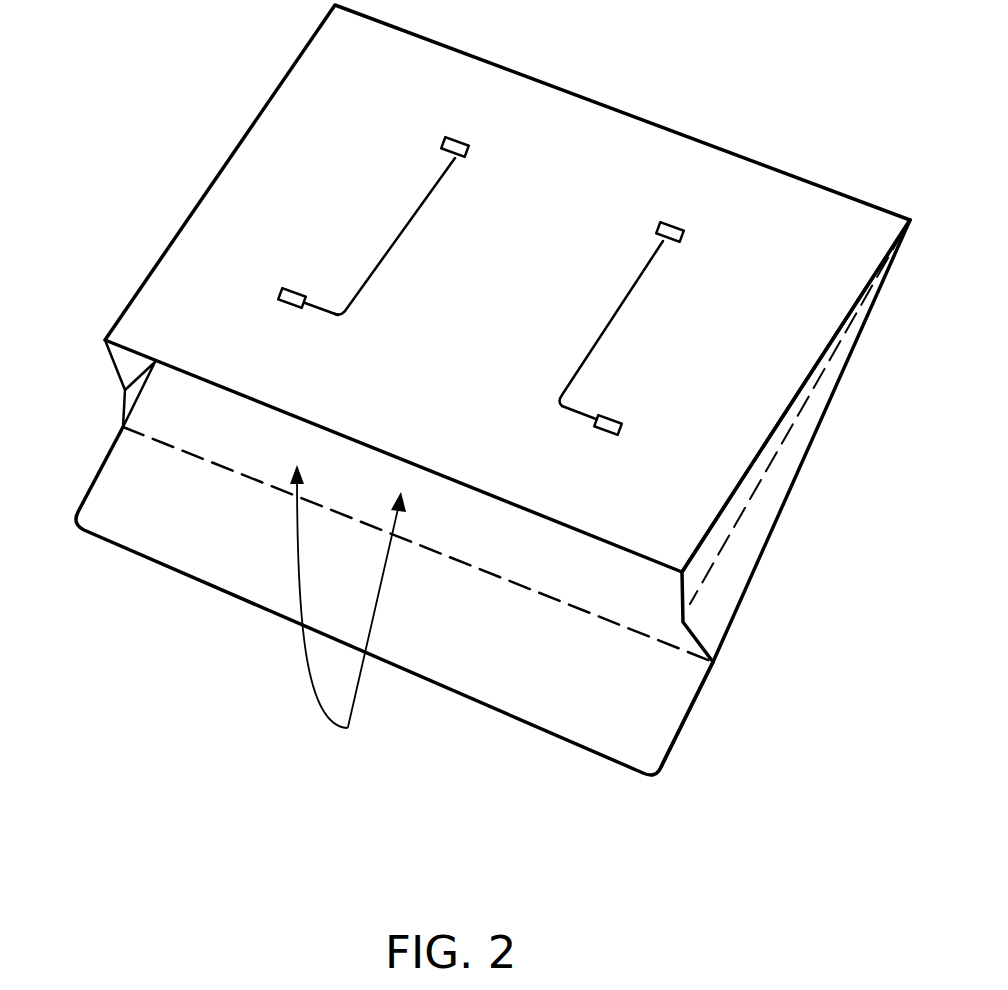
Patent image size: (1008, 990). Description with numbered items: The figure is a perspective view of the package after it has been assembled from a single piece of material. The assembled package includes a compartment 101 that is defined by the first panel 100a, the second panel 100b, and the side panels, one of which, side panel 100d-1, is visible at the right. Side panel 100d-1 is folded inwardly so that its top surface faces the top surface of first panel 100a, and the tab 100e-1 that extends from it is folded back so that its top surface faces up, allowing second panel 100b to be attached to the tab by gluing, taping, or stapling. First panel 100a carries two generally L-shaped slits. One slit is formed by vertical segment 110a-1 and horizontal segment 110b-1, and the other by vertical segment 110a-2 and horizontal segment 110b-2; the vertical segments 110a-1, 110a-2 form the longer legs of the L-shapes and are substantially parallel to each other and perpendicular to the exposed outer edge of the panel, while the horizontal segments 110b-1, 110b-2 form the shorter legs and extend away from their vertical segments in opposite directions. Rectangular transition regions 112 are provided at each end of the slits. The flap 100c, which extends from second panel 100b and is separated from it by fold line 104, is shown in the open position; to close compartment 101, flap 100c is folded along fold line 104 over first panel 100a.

The first panel 100a is at (255, 200).
The second panel 100b is at (598, 590).
The flap 100c is at (248, 567).
The side panel 100d-1 is at (707, 557).
The tab 100e-1 is at (717, 623).
The compartment 101 is at (348, 605).
The fold line 104 is at (192, 459).
The vertical segment 110a-1 is at (632, 288).
The vertical segment 110a-2 is at (402, 227).
The horizontal segment 110b-1 is at (570, 407).
The horizontal segment 110b-2 is at (322, 312).
The rectangular transition region 112 is at (468, 147).